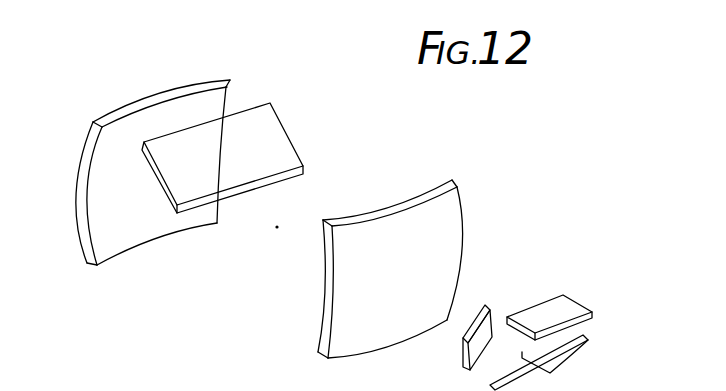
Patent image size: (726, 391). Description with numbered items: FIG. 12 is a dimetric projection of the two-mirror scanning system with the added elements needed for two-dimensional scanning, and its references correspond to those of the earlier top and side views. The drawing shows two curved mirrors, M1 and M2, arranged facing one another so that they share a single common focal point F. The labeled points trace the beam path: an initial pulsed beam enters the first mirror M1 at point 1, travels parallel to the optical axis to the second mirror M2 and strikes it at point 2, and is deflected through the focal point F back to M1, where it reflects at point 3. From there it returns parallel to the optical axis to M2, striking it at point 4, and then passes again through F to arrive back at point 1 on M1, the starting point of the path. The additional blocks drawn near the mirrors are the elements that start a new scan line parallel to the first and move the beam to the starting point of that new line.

The first mirror M1 is at (165, 158).
The second mirror M2 is at (395, 254).
The initial beam entry point 1 is at (469, 337).
The first strike point on M2 2 is at (222, 169).
The reflection point on M1 3 is at (325, 274).
The second strike point on M2 4 is at (87, 181).
The focal point F is at (286, 223).